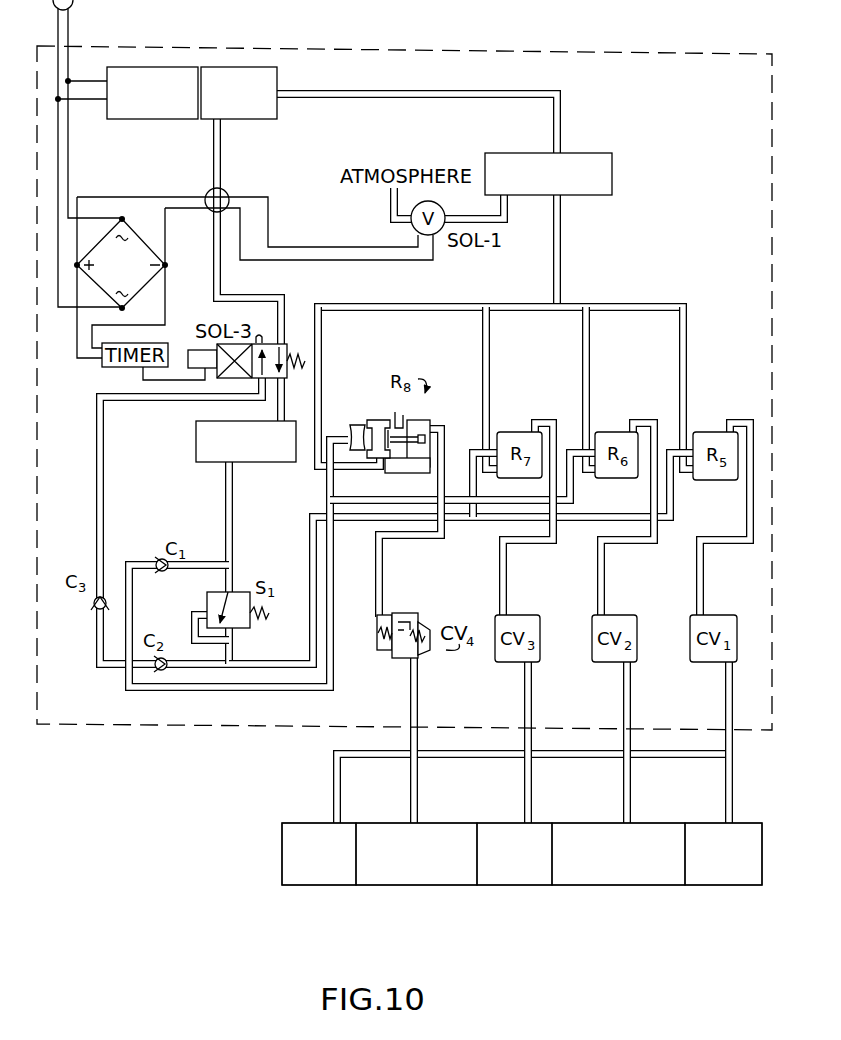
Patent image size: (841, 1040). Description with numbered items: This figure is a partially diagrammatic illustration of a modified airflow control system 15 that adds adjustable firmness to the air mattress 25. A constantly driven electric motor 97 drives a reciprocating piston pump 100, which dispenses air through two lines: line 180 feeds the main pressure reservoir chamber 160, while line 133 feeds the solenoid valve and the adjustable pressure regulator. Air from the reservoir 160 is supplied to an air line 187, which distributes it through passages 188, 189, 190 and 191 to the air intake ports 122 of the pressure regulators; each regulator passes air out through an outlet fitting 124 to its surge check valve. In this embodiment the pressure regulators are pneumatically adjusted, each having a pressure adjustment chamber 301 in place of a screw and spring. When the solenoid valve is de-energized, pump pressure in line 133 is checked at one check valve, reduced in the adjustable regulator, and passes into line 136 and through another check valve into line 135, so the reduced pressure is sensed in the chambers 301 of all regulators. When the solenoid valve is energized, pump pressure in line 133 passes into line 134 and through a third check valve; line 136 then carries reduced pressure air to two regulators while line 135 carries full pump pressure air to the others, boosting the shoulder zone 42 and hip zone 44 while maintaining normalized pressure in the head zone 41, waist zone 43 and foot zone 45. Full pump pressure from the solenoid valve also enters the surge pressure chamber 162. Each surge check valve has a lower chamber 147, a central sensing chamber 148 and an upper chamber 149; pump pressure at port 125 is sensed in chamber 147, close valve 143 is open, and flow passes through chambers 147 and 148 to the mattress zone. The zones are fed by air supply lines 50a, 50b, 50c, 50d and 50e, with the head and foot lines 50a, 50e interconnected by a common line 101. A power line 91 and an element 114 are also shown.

The airflow control system 15 is at (156, 728).
The mattress 25 is at (268, 870).
The head zone 41 is at (318, 887).
The shoulder zone 42 is at (400, 888).
The waist zone 43 is at (547, 890).
The hip zone 44 is at (645, 890).
The foot zone 45 is at (738, 892).
The air supply line 50a is at (330, 790).
The air supply line 50b is at (404, 800).
The air supply line 50c is at (520, 777).
The air supply line 50d is at (622, 795).
The air supply line 50e is at (724, 782).
The power supply line 91 is at (86, 20).
The electric motor 97 is at (133, 119).
The reciprocating piston pump 100 is at (279, 120).
The common line 101 is at (720, 712).
The diaphragm 114 is at (372, 420).
The air intake port 122 is at (428, 445).
The outlet fitting 124 is at (410, 418).
The inlet port 125 is at (383, 616).
The line 133 is at (223, 293).
The line 134 is at (104, 488).
The line 135 is at (234, 696).
The line 136 is at (256, 644).
The close valve 143 is at (386, 625).
The lower chamber 147 is at (377, 650).
The central sensing chamber 148 is at (403, 657).
The upper chamber 149 is at (421, 652).
The pressure reservoir chamber 160 is at (612, 153).
The surge pressure chamber 162 is at (196, 453).
The line 180 is at (383, 93).
The air line 187 is at (562, 251).
The passage 188 is at (688, 318).
The passage 189 is at (592, 328).
The passage 190 is at (490, 328).
The passage 191 is at (323, 325).
The pressure adjustment chamber 301 is at (366, 418).